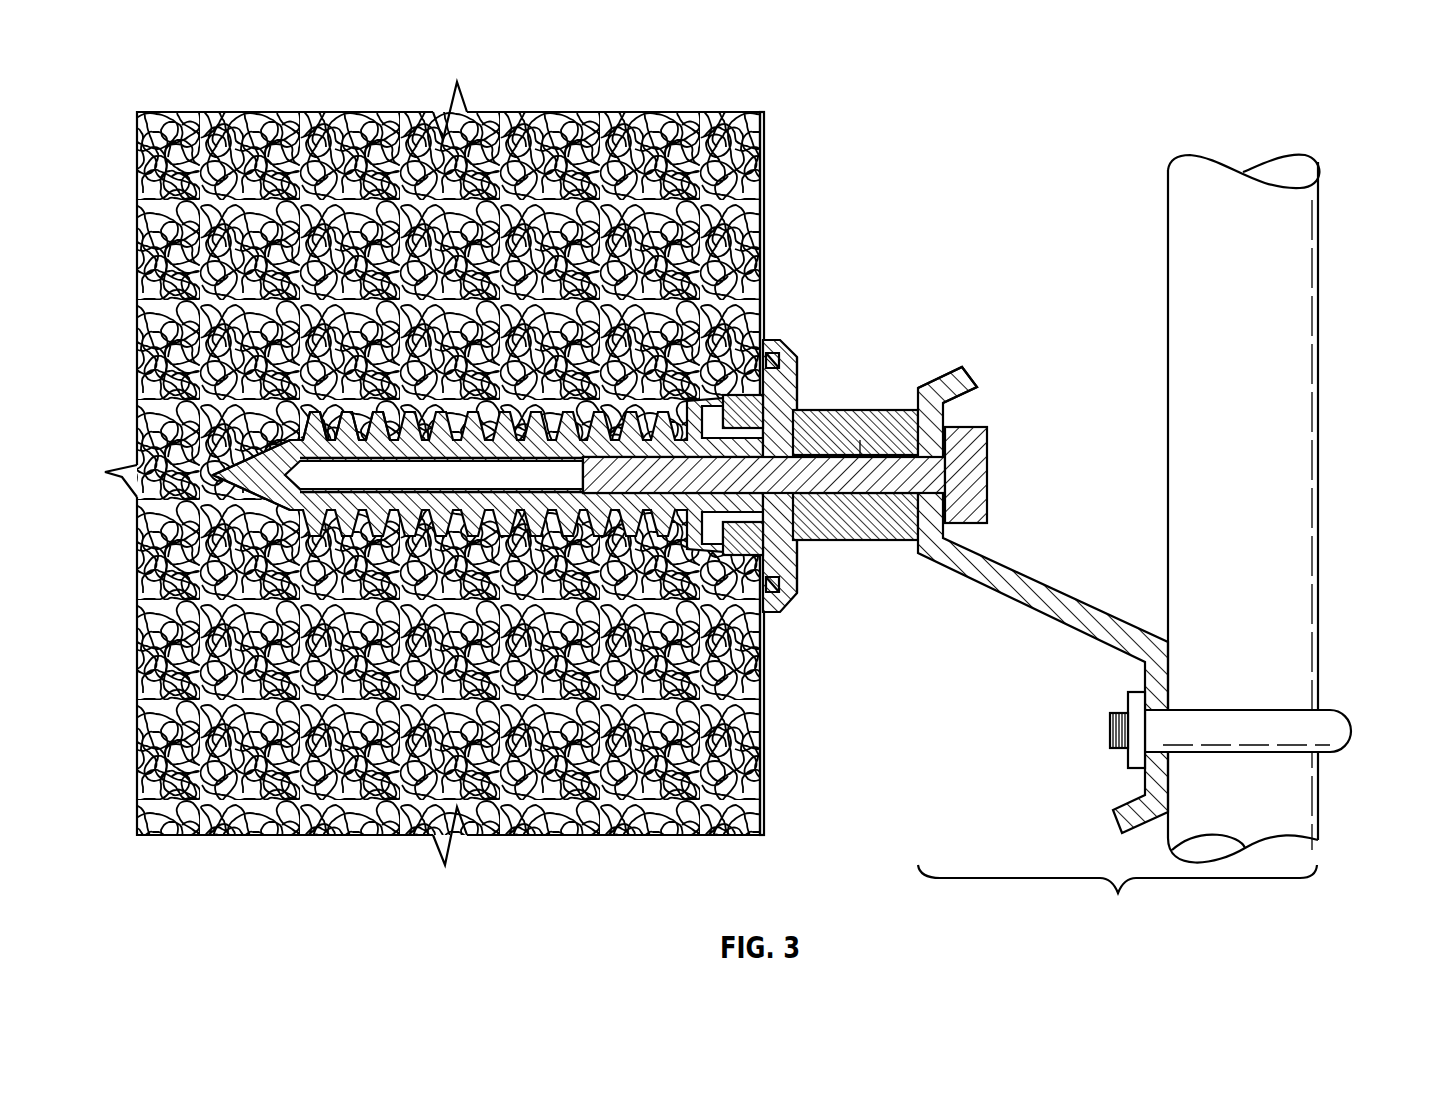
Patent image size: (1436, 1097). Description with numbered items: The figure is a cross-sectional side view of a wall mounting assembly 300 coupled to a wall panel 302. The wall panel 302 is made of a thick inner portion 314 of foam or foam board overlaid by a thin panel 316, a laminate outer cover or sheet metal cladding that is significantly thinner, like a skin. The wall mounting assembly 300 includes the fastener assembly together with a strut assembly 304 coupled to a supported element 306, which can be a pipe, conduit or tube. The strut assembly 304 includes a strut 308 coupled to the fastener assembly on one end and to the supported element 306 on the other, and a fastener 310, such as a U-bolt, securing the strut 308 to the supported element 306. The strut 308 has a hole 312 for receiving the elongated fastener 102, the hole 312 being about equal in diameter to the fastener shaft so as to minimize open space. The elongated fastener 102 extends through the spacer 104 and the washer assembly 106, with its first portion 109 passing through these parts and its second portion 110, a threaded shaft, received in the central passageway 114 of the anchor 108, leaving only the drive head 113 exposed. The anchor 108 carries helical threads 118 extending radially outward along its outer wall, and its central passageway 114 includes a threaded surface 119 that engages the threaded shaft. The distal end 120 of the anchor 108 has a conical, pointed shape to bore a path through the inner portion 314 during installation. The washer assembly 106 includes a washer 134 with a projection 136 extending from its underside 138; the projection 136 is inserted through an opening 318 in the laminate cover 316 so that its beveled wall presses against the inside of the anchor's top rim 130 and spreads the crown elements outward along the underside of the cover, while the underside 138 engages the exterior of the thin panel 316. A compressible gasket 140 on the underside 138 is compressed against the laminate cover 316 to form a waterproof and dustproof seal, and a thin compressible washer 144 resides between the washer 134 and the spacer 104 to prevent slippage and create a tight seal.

The wall mounting assembly 300 is at (1056, 72).
The wall panel 302 is at (660, 80).
The strut assembly 304 is at (1117, 899).
The supported element 306 is at (1320, 285).
The strut 308 is at (1043, 574).
The fastener 310 is at (1352, 722).
The hole 312 is at (932, 442).
The inner portion 314 is at (700, 175).
The thin panel 316 is at (764, 163).
The opening 318 is at (797, 570).
The elongated fastener 102 is at (988, 430).
The spacer 104 is at (863, 449).
The washer assembly 106 is at (802, 553).
The anchor 108 is at (213, 484).
The first portion 109 is at (860, 455).
The second portion 110 is at (653, 497).
The drive head 113 is at (990, 475).
The central passageway 114 is at (390, 482).
The helical threads 118 is at (372, 436).
The threaded surface 119 is at (556, 453).
The distal end 120 is at (214, 470).
The top rim 130 is at (855, 432).
The washer 134 is at (798, 362).
The projection 136 is at (745, 458).
The underside 138 is at (780, 343).
The compressible gasket 140 is at (780, 362).
The compressible washer 144 is at (800, 521).